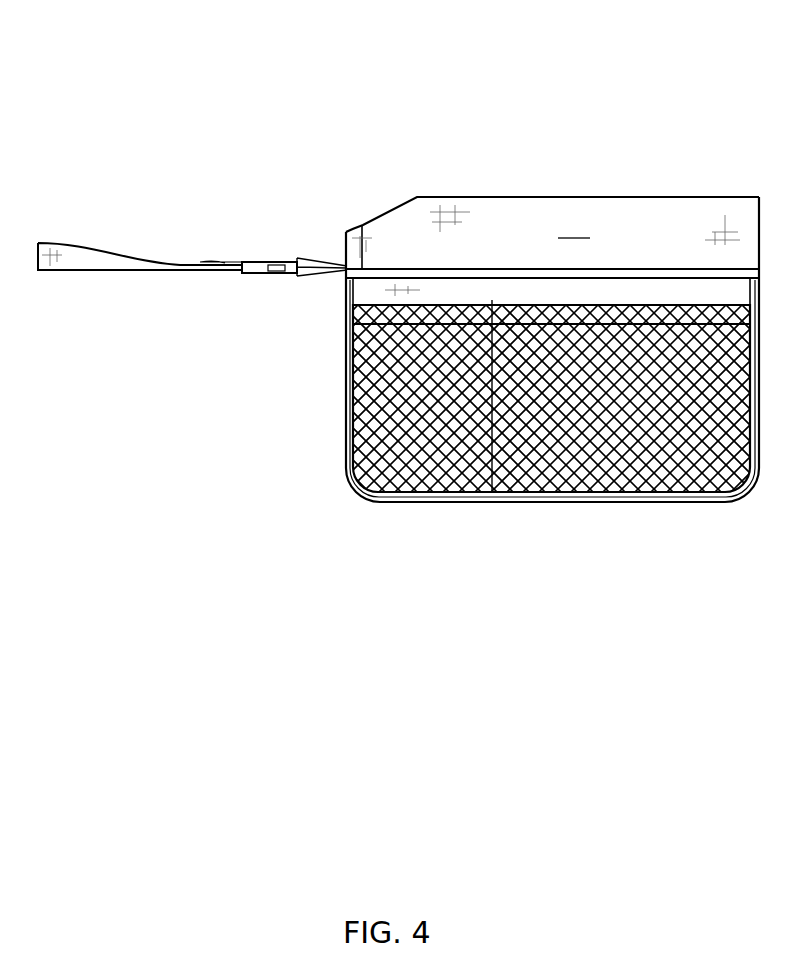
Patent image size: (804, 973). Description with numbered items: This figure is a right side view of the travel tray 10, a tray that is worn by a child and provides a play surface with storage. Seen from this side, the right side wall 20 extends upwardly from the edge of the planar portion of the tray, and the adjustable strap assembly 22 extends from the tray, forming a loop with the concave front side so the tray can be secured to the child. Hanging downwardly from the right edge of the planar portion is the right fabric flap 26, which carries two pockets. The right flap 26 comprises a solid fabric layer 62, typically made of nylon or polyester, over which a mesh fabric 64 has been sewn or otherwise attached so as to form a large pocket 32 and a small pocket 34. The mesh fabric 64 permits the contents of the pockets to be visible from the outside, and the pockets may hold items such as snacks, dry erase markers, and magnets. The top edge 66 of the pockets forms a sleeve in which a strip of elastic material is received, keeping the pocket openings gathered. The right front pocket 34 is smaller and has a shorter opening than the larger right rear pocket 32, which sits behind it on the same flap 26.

The travel tray 10 is at (421, 276).
The right side wall 20 is at (552, 237).
The adjustable strap assembly 22 is at (83, 252).
The right fabric flap 26 is at (759, 292).
The large pocket 32 is at (433, 468).
The small pocket 34 is at (610, 477).
The solid fabric layer 62 is at (365, 290).
The mesh fabric 64 is at (730, 382).
The top edge 66 is at (650, 305).